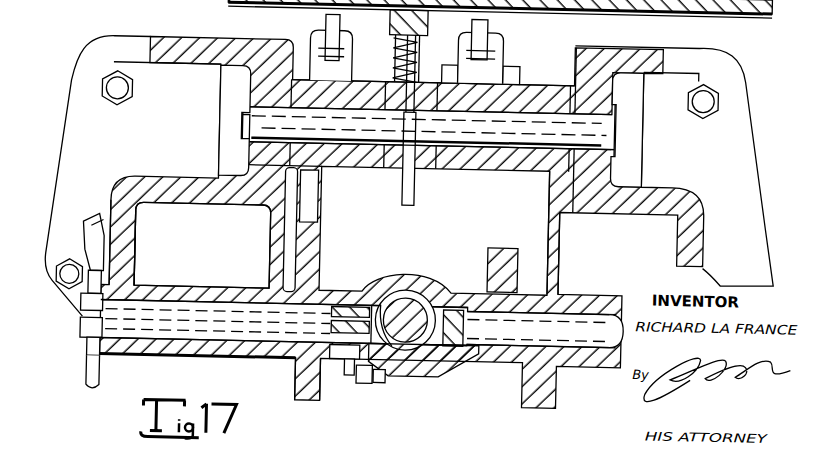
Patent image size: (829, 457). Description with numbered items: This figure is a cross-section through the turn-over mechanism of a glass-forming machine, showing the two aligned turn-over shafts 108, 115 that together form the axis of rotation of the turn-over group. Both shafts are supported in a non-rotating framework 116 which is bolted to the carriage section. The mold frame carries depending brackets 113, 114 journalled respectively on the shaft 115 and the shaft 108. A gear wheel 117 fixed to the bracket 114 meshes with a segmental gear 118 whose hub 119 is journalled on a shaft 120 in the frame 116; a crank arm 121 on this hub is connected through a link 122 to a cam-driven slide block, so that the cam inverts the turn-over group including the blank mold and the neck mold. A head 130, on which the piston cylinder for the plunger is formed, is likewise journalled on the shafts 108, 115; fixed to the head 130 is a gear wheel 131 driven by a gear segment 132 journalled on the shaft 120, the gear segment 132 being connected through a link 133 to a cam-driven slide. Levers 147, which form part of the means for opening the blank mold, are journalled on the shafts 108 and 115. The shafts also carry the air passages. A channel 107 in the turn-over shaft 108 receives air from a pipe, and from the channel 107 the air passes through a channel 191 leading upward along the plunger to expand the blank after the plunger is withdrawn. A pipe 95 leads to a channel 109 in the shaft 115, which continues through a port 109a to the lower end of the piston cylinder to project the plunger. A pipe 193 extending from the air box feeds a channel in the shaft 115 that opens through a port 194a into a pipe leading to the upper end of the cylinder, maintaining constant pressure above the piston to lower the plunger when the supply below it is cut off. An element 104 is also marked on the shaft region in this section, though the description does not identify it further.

The pipe 95 is at (90, 388).
The hub 104 is at (348, 303).
The channel 107 is at (625, 320).
The turn-over shaft 108 is at (478, 310).
The channel 109 is at (350, 361).
The port 109a is at (356, 377).
The depending bracket 113 is at (234, 292).
The depending bracket 114 is at (570, 292).
The turn-over shaft 115 is at (239, 346).
The non-rotating framework 116 is at (107, 50).
The gear wheel 117 is at (560, 269).
The segmental gear 118 is at (545, 205).
The hub 119 is at (442, 164).
The shaft 120 is at (532, 122).
The crank arm 121 is at (491, 54).
The link 122 is at (474, 32).
The head 130 is at (426, 365).
The gear wheel 131 is at (300, 385).
The gear segment 132 is at (304, 207).
The link 133 is at (326, 27).
The lever 147 is at (178, 293).
The channel 191 is at (441, 339).
The pipe 193 is at (92, 245).
The port 194a is at (386, 384).